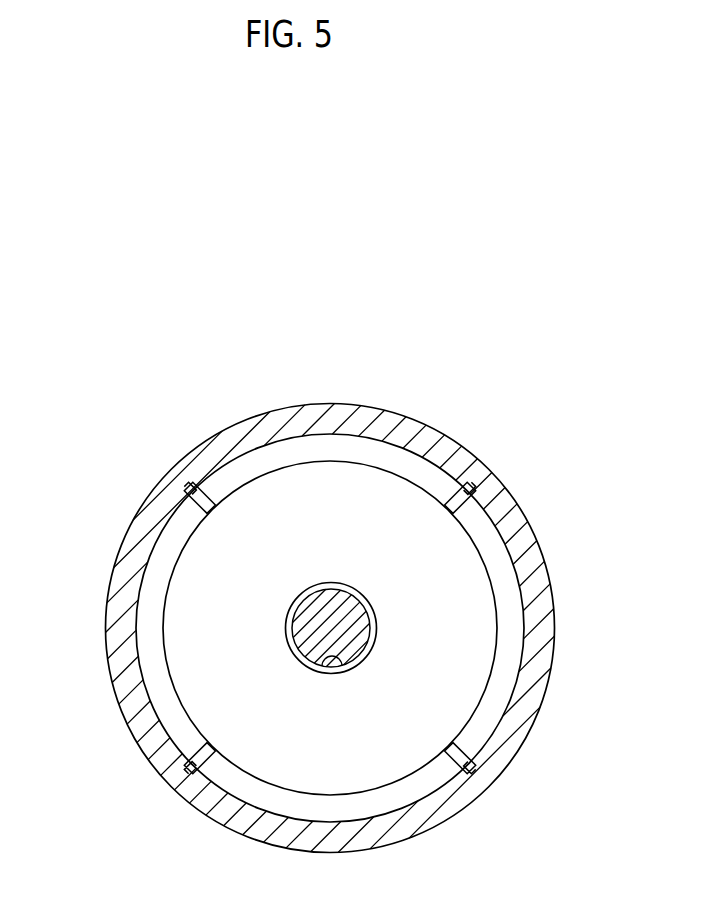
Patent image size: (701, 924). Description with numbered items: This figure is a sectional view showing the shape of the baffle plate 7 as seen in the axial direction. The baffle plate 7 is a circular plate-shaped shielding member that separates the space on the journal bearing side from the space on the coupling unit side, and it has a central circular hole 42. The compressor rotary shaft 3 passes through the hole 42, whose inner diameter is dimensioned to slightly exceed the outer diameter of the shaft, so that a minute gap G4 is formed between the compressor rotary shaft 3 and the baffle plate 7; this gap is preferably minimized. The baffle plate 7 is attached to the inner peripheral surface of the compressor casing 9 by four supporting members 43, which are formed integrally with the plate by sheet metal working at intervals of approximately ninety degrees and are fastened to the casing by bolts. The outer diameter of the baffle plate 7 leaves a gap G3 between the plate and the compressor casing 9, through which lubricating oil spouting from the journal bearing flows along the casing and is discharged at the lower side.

The compressor rotary shaft 3 is at (357, 616).
The baffle plate 7 is at (332, 478).
The compressor casing 9 is at (410, 425).
The hole 42 is at (338, 664).
The supporting member 43 is at (200, 503).
The gap G3 is at (410, 795).
The minute gap G4 is at (296, 651).